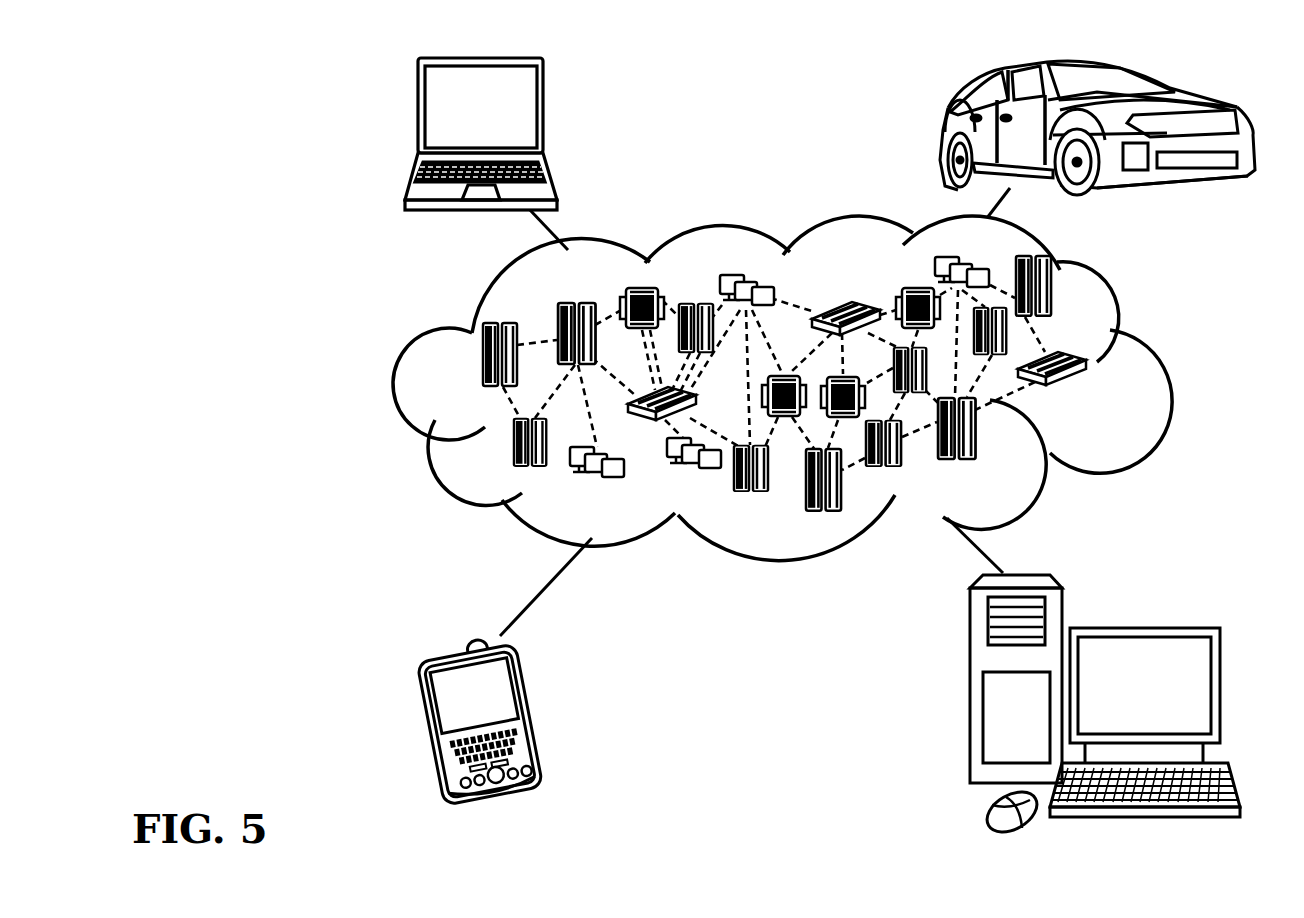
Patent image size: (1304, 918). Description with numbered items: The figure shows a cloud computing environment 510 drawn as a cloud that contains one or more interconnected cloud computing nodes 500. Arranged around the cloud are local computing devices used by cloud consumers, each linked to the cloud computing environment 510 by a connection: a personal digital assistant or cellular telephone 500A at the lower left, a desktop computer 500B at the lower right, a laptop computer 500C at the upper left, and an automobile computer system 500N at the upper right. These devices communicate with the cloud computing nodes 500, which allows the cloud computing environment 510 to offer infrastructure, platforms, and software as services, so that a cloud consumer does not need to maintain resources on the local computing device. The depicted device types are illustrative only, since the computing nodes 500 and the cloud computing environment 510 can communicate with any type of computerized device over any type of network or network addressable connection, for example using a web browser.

The cloud computing nodes 500 is at (176, 59).
The cloud computing environment 510 is at (1143, 366).
The personal digital assistant (PDA) or cellular telephone 500A is at (535, 712).
The desktop computer 500B is at (1140, 628).
The laptop computer 500C is at (543, 114).
The automobile computer system 500N is at (942, 132).